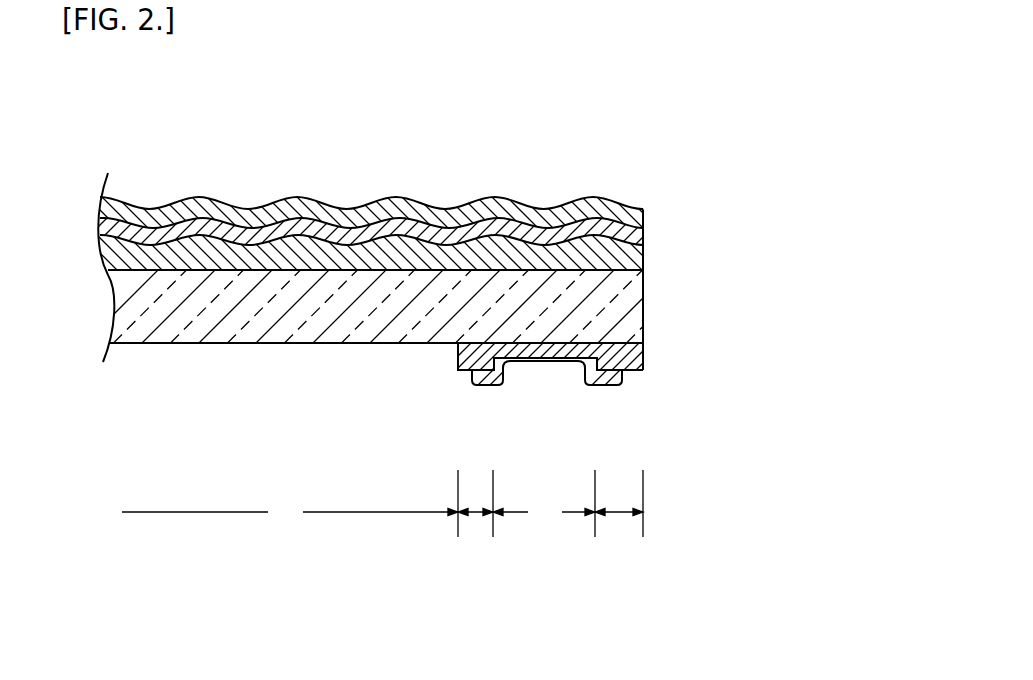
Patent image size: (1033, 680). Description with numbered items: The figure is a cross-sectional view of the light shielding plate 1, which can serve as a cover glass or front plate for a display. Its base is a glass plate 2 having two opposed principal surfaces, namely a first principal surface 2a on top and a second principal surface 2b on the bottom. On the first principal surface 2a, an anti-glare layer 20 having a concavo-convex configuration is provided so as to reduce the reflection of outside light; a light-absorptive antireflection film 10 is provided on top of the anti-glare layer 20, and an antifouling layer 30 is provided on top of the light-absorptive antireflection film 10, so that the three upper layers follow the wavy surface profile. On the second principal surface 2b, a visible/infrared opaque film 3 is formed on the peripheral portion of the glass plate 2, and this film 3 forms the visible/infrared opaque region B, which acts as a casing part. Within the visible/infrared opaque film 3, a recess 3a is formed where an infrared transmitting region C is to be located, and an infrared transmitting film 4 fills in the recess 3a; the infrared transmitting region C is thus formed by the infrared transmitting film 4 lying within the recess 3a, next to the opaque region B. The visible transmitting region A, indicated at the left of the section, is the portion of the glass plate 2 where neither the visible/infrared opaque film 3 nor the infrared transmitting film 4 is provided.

The light shielding plate 1 is at (545, 120).
The antifouling layer 30 is at (643, 220).
The light-absorptive antireflection film 10 is at (643, 240).
The anti-glare layer 20 is at (643, 256).
The glass plate 2 is at (643, 301).
The first principal surface 2a is at (597, 271).
The second principal surface 2b is at (272, 344).
The visible/infrared opaque film 3 is at (456, 358).
The recess 3a is at (503, 383).
The infrared transmitting film 4 is at (596, 383).
The visible transmitting region A is at (290, 503).
The visible/infrared opaque region B is at (473, 515).
The infrared transmitting region C is at (544, 503).